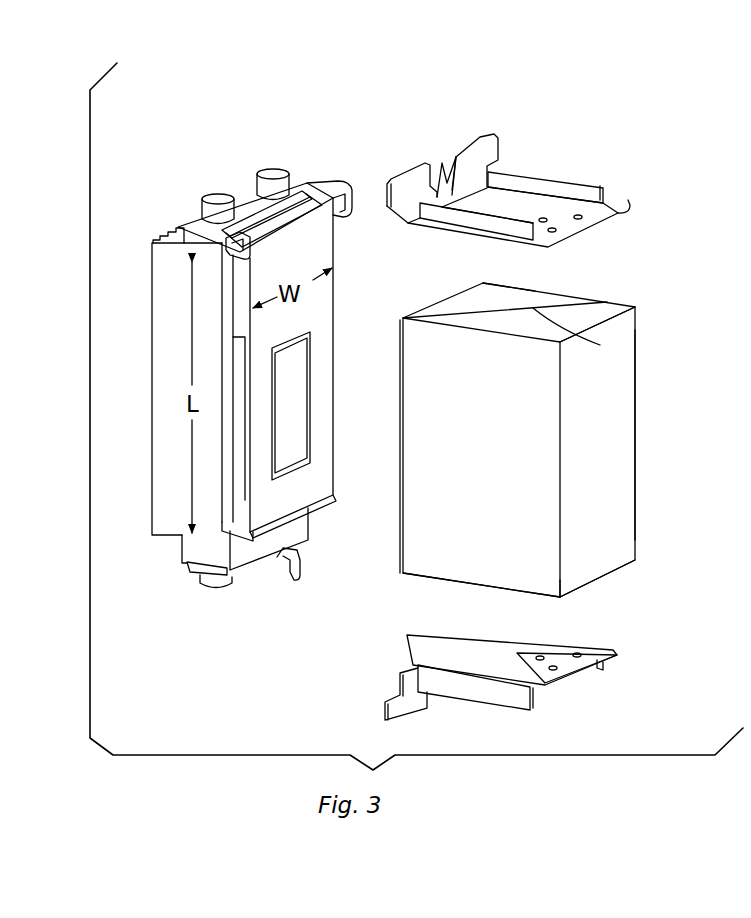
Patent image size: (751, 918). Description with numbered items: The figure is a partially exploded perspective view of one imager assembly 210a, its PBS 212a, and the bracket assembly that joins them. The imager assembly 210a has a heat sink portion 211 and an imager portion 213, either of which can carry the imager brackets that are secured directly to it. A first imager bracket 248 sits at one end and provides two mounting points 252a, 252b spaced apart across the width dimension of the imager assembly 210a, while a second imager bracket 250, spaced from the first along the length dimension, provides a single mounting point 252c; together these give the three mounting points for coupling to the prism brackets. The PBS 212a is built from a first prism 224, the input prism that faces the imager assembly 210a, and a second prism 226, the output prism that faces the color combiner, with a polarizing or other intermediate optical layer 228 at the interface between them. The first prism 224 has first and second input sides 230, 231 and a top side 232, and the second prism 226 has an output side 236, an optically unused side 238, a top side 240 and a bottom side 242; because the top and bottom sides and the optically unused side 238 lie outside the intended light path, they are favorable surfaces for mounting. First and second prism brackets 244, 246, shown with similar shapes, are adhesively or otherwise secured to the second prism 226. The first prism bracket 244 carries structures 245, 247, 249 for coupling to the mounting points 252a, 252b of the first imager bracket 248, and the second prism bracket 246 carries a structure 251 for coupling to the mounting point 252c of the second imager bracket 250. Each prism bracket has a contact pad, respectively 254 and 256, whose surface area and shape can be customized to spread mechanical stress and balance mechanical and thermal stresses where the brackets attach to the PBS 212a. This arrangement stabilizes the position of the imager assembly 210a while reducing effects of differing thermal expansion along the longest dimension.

The imager assembly 210a is at (160, 513).
The heat sink portion 211 is at (152, 382).
The imager portion 213 is at (325, 432).
The first imager bracket 248 is at (257, 200).
The mounting point 252a is at (237, 243).
The mounting point 252b is at (348, 192).
The mounting point 252c is at (298, 576).
The second imager bracket 250 is at (220, 580).
The PBS 212a is at (635, 418).
The first prism 224 is at (584, 294).
The second prism 226 is at (609, 578).
The intermediate optical layer 228 is at (600, 345).
The first input side 230 is at (442, 298).
The second input side 231 is at (513, 287).
The top side 232 is at (482, 292).
The output side 236 is at (618, 502).
The optically unused side 238 is at (472, 555).
The top side 240 is at (580, 315).
The bottom side 242 is at (570, 597).
The first prism bracket 244 is at (560, 180).
The coupling structure 245 is at (483, 140).
The coupling structure 247 is at (410, 173).
The coupling structure 249 is at (448, 162).
The contact pad 254 is at (627, 215).
The second prism bracket 246 is at (480, 705).
The coupling structure 251 is at (397, 723).
The contact pad 256 is at (573, 660).